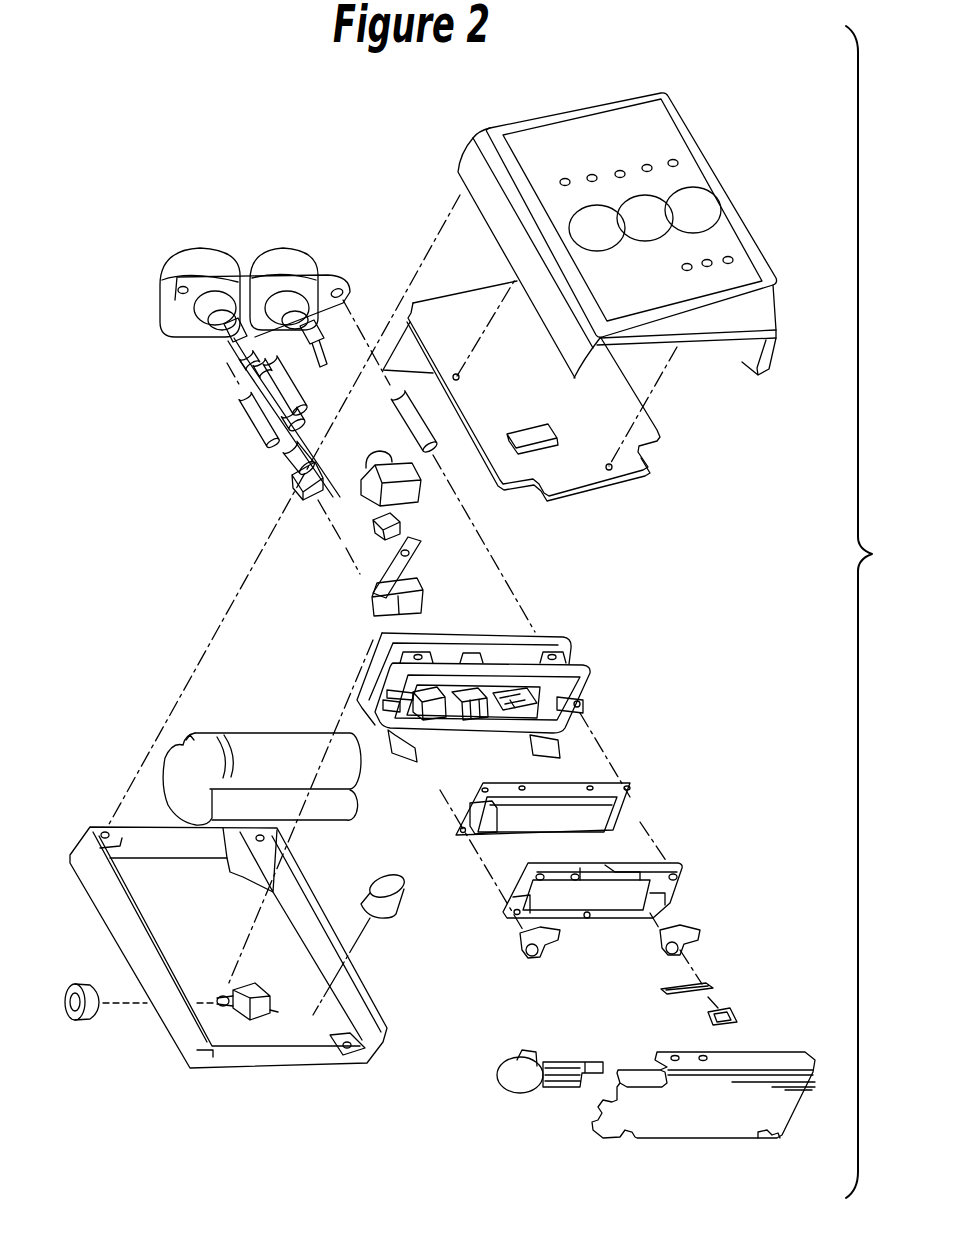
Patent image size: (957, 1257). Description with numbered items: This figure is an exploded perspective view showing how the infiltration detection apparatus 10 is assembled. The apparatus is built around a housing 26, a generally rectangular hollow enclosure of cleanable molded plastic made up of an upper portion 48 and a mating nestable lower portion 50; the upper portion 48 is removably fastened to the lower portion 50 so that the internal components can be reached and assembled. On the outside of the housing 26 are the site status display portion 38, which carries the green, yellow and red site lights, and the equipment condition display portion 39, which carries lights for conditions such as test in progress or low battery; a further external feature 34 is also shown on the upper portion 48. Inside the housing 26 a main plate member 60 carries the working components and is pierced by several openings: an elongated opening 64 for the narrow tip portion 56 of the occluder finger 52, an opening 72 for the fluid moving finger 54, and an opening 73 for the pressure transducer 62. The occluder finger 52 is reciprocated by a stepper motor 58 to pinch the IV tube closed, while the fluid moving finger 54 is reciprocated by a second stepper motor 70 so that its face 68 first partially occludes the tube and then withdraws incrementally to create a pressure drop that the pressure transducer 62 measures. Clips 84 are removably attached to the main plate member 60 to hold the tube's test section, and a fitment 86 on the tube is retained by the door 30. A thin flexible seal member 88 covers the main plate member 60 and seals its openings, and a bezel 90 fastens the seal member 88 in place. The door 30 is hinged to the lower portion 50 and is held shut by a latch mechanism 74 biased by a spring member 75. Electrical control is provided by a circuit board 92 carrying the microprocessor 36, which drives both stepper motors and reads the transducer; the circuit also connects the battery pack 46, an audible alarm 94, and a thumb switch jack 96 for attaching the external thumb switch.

The infiltration detection apparatus 10 is at (258, 92).
The housing 26 is at (469, 158).
The door 30 is at (598, 1125).
The push button openings 34 is at (714, 202).
The microprocessor 36 is at (556, 428).
The site status display portion 38 is at (731, 258).
The equipment condition display portion 39 is at (675, 159).
The battery pack 46 is at (231, 776).
The upper portion 48 is at (774, 287).
The lower portion 50 is at (108, 918).
The occluder finger 52 is at (292, 483).
The fluid moving finger 54 is at (408, 470).
The tip portion 56 is at (303, 503).
The stepper motor 58 is at (190, 262).
The main plate member 60 is at (592, 668).
The pressure transducer 62 is at (367, 610).
The elongated opening 64 is at (440, 720).
The face 68 is at (417, 494).
The stepper motor 70 is at (289, 258).
The opening 72 is at (520, 700).
The opening 73 is at (467, 713).
The latch mechanism 74 is at (498, 1080).
The spring member 75 is at (710, 984).
The clips 84 is at (520, 947).
The fitment 86 is at (700, 932).
The seal member 88 is at (607, 823).
The bezel 90 is at (687, 868).
The circuit board 92 is at (658, 440).
The audible alarm 94 is at (383, 918).
The thumb switch jack 96 is at (247, 1018).